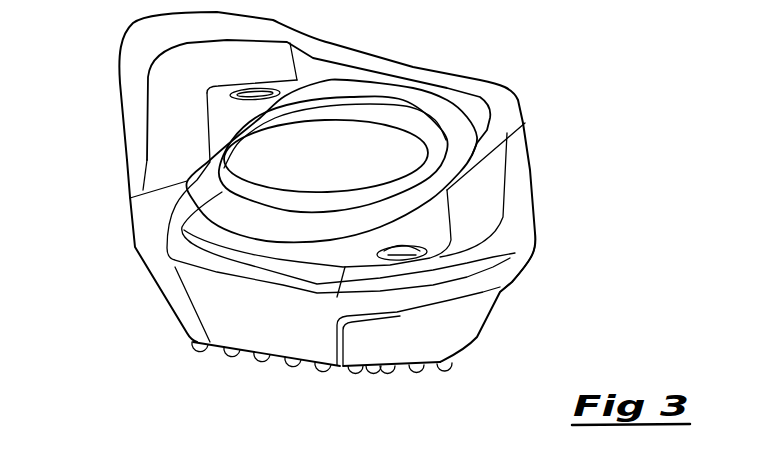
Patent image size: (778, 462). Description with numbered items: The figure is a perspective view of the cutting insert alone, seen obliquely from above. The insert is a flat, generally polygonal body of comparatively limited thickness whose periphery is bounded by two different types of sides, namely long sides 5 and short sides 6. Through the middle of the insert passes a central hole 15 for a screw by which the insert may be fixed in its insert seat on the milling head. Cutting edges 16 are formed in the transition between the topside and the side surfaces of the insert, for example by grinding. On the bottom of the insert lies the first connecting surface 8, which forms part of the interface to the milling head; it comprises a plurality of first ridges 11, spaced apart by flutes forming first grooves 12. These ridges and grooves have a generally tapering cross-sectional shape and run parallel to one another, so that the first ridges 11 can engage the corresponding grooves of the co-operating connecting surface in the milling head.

The long sides 5 is at (118, 158).
The short sides 6 is at (283, 328).
The first connecting surface 8 is at (411, 390).
The first ridges 11 is at (327, 372).
The first grooves 12 is at (374, 376).
The central hole 15 is at (370, 132).
The cutting edges 16 is at (493, 263).